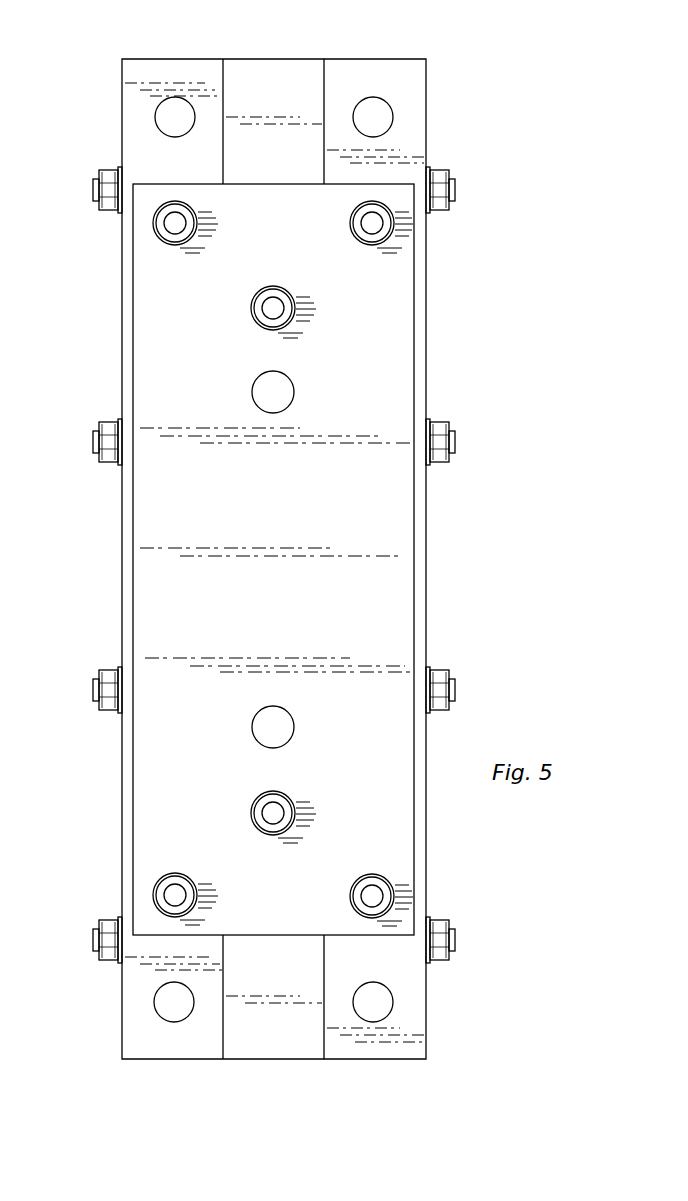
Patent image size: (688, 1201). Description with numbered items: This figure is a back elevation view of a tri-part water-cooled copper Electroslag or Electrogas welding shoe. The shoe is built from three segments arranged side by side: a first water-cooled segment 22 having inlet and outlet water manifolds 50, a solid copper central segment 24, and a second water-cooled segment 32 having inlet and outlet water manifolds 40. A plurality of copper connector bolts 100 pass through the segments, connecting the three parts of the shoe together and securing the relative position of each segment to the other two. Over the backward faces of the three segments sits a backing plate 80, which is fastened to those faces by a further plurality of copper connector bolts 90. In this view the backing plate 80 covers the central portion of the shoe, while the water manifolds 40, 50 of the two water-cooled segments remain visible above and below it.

The first water-cooled segment 22 is at (398, 77).
The solid copper central segment 24 is at (248, 86).
The second water-cooled segment 32 is at (136, 72).
The inlet and outlet water manifolds 40 is at (162, 132).
The inlet and outlet water manifolds 50 is at (384, 128).
The backing plate 80 is at (380, 537).
The copper connector bolts 90 is at (160, 228).
The copper connector bolts 100 is at (96, 675).